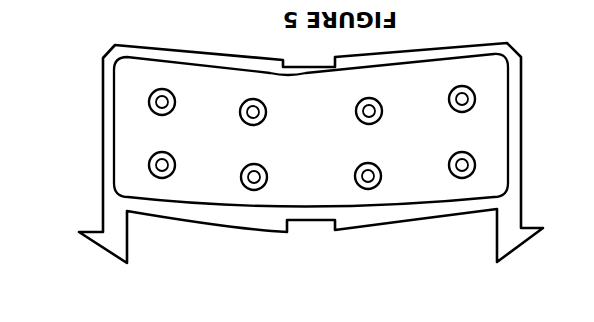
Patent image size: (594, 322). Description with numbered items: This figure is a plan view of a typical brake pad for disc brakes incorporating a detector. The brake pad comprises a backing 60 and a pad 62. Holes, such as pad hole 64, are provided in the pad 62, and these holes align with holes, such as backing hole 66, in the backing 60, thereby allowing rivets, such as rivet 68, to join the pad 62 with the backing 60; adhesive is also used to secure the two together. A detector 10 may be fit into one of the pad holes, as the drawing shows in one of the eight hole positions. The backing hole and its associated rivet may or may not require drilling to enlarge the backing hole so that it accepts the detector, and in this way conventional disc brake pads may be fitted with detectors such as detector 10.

The backing 60 is at (118, 237).
The pad 62 is at (202, 190).
The detector 10 is at (256, 190).
The pad hole 64 is at (366, 189).
The backing hole 66 is at (461, 178).
The rivet 68 is at (470, 89).